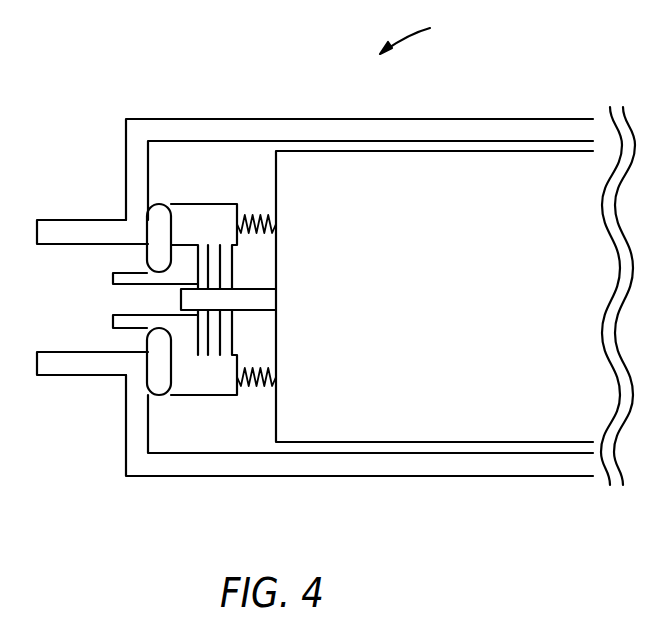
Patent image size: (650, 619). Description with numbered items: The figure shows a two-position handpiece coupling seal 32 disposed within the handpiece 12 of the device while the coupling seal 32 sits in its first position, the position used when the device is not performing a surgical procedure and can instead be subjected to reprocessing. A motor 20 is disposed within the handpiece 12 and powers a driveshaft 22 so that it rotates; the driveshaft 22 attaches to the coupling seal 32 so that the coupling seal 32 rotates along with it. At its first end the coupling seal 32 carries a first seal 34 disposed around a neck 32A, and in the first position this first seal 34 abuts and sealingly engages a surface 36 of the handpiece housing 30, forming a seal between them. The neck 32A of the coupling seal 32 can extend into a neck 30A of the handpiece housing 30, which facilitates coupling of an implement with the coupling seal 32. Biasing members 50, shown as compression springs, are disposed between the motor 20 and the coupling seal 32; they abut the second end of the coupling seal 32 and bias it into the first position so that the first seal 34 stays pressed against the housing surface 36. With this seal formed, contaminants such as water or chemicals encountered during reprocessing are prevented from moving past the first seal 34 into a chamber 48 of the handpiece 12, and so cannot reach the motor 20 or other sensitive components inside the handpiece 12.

The handpiece 12 is at (415, 37).
The motor 20 is at (498, 428).
The driveshaft 22 is at (181, 298).
The handpiece housing 30 is at (485, 120).
The neck of the handpiece housing 30A is at (56, 220).
The two-position handpiece coupling seal 32 is at (204, 204).
The neck 32A is at (113, 318).
The first seal 34 is at (147, 217).
The handpiece housing surface 36 is at (150, 174).
The chamber 48 is at (163, 152).
The biasing members 50 is at (245, 214).